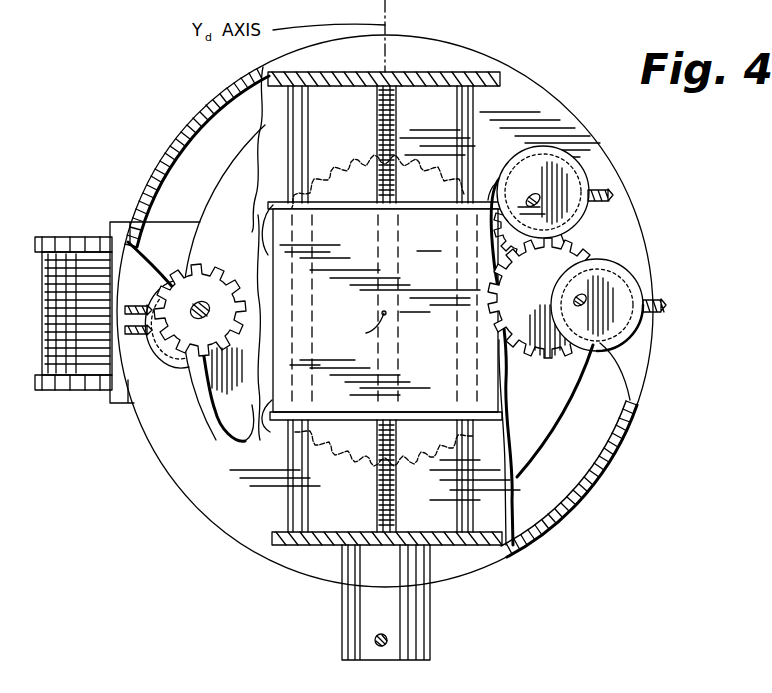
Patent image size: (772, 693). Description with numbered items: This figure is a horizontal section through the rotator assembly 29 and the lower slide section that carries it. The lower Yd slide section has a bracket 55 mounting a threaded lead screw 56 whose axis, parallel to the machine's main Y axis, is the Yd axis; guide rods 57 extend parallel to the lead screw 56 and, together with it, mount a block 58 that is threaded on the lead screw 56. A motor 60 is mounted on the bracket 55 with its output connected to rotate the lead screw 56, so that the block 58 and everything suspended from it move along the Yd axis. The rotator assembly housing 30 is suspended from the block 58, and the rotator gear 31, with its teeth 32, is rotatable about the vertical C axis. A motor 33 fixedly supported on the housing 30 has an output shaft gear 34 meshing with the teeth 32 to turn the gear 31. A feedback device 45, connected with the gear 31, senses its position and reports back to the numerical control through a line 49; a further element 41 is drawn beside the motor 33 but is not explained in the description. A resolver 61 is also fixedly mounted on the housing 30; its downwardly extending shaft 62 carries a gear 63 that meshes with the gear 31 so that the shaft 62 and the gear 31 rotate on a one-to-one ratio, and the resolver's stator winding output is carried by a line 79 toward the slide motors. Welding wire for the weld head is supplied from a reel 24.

The reel 24 is at (50, 237).
The rotator assembly 29 is at (148, 122).
The housing 30 is at (610, 470).
The gear 31 is at (509, 382).
The teeth 32 is at (527, 357).
The motor 33 is at (640, 340).
The output shaft gear 34 is at (600, 343).
The shaft 41 is at (640, 300).
The feedback device 45 is at (573, 163).
The line 49 is at (605, 188).
The bracket 55 is at (440, 72).
The threaded lead screw 56 is at (378, 113).
The rods 57 is at (288, 135).
The block 58 is at (415, 306).
The motor 60 is at (432, 617).
The resolver 61 is at (188, 368).
The shaft 62 is at (200, 300).
The gear 63 is at (185, 292).
The line 79 is at (375, 640).